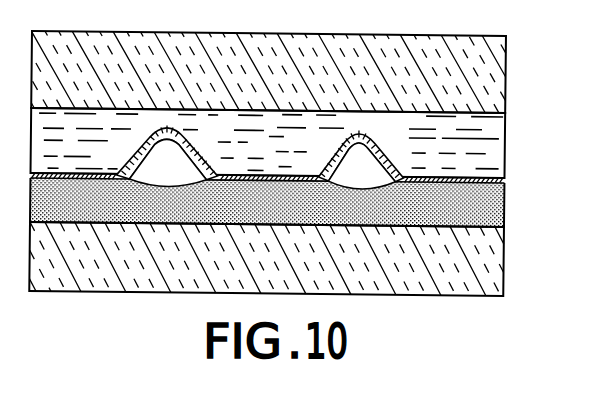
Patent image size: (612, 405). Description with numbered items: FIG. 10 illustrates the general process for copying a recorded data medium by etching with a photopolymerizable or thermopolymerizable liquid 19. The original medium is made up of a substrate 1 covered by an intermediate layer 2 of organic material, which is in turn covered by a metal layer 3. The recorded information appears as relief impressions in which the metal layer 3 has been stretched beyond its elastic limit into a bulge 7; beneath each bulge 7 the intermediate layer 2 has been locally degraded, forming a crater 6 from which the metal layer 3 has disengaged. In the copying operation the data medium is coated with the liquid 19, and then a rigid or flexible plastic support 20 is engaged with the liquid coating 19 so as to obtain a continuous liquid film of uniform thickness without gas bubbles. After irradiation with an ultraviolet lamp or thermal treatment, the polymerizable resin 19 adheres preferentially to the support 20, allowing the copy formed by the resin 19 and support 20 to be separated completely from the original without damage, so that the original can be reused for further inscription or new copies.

The substrate 1 is at (498, 262).
The intermediate layer 2 is at (496, 208).
The metal layer 3 is at (504, 180).
The crater 6 is at (374, 182).
The bulge 7 is at (387, 147).
The photopolymerizable or thermopolymerizable liquid 19 is at (493, 139).
The support 20 is at (493, 82).